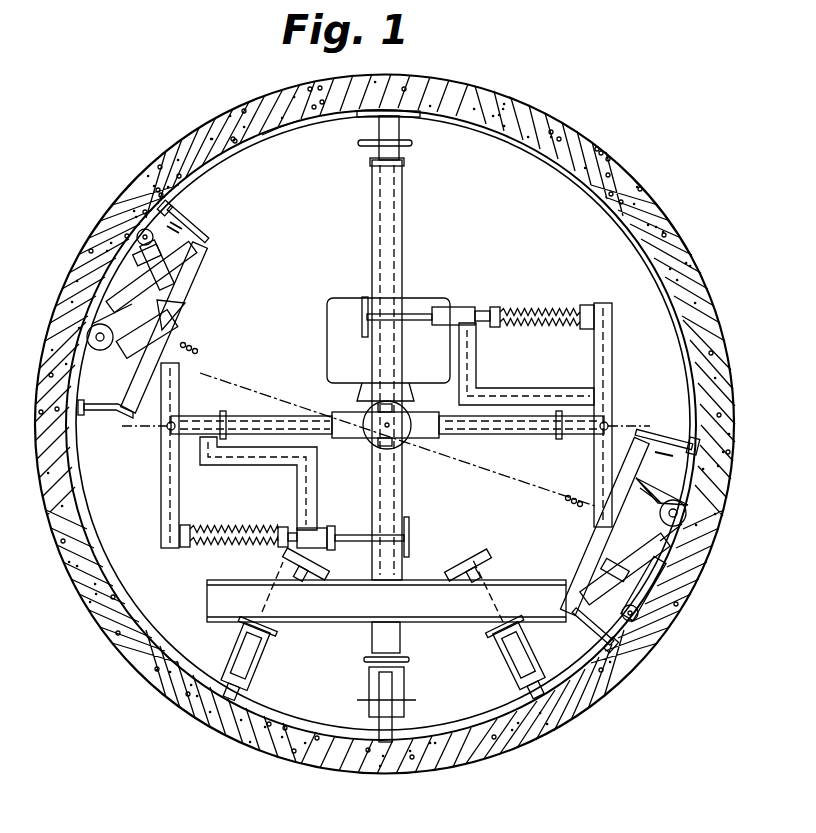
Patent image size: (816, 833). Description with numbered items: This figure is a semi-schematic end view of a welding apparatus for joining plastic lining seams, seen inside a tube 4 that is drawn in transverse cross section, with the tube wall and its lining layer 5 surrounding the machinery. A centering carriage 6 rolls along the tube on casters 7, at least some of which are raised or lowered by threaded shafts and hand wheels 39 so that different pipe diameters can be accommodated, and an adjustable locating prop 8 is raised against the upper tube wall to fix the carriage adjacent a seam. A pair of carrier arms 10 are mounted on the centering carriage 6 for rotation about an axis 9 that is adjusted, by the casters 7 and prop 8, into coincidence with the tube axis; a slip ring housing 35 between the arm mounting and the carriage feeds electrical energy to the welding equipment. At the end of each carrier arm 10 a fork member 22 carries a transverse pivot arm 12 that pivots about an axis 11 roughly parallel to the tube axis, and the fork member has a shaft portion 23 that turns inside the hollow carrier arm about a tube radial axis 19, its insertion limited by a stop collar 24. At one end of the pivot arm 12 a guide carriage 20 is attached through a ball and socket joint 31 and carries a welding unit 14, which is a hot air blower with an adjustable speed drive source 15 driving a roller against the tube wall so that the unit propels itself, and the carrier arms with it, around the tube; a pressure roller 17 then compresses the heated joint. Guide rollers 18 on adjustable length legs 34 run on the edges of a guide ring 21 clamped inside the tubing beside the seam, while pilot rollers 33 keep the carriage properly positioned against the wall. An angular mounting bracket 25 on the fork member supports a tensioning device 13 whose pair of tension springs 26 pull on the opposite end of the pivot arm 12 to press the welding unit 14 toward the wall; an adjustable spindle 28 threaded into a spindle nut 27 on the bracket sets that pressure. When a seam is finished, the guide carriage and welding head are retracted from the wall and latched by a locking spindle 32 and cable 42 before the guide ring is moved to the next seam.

The tube 4 is at (575, 138).
The tunnel lining 5 is at (586, 187).
The centering carriage 6 is at (339, 652).
The casters 7 is at (240, 656).
The locating prop 8 is at (403, 118).
The axis of rotation 9 is at (392, 432).
The carrier arms 10 is at (317, 418).
The pivot axis 11 is at (165, 440).
The pivot arm 12 is at (163, 513).
The tensioning device 13 is at (573, 290).
The welding unit 14 is at (168, 257).
The drive source 15 is at (172, 300).
The pressure roller 17 is at (95, 326).
The guide rollers 18 is at (175, 210).
The tube radial axis 19 is at (162, 429).
The guide carriage 20 is at (206, 266).
The guide ring 21 is at (262, 136).
The fork member 22 is at (190, 442).
The shaft portion 23 is at (252, 398).
The stop collar 24 is at (225, 412).
The mounting bracket 25 is at (500, 395).
The tension springs 26 is at (530, 307).
The spindle nut 27 is at (455, 308).
The adjustable spindle 28 is at (412, 316).
The ball and socket joint 31 is at (186, 324).
The locking spindle 32 is at (145, 402).
The pilot rollers 33 is at (140, 237).
The adjustable length legs 34 is at (200, 236).
The slip ring housing 35 is at (375, 386).
The hand wheels 39 is at (470, 557).
The cable 42 is at (539, 477).